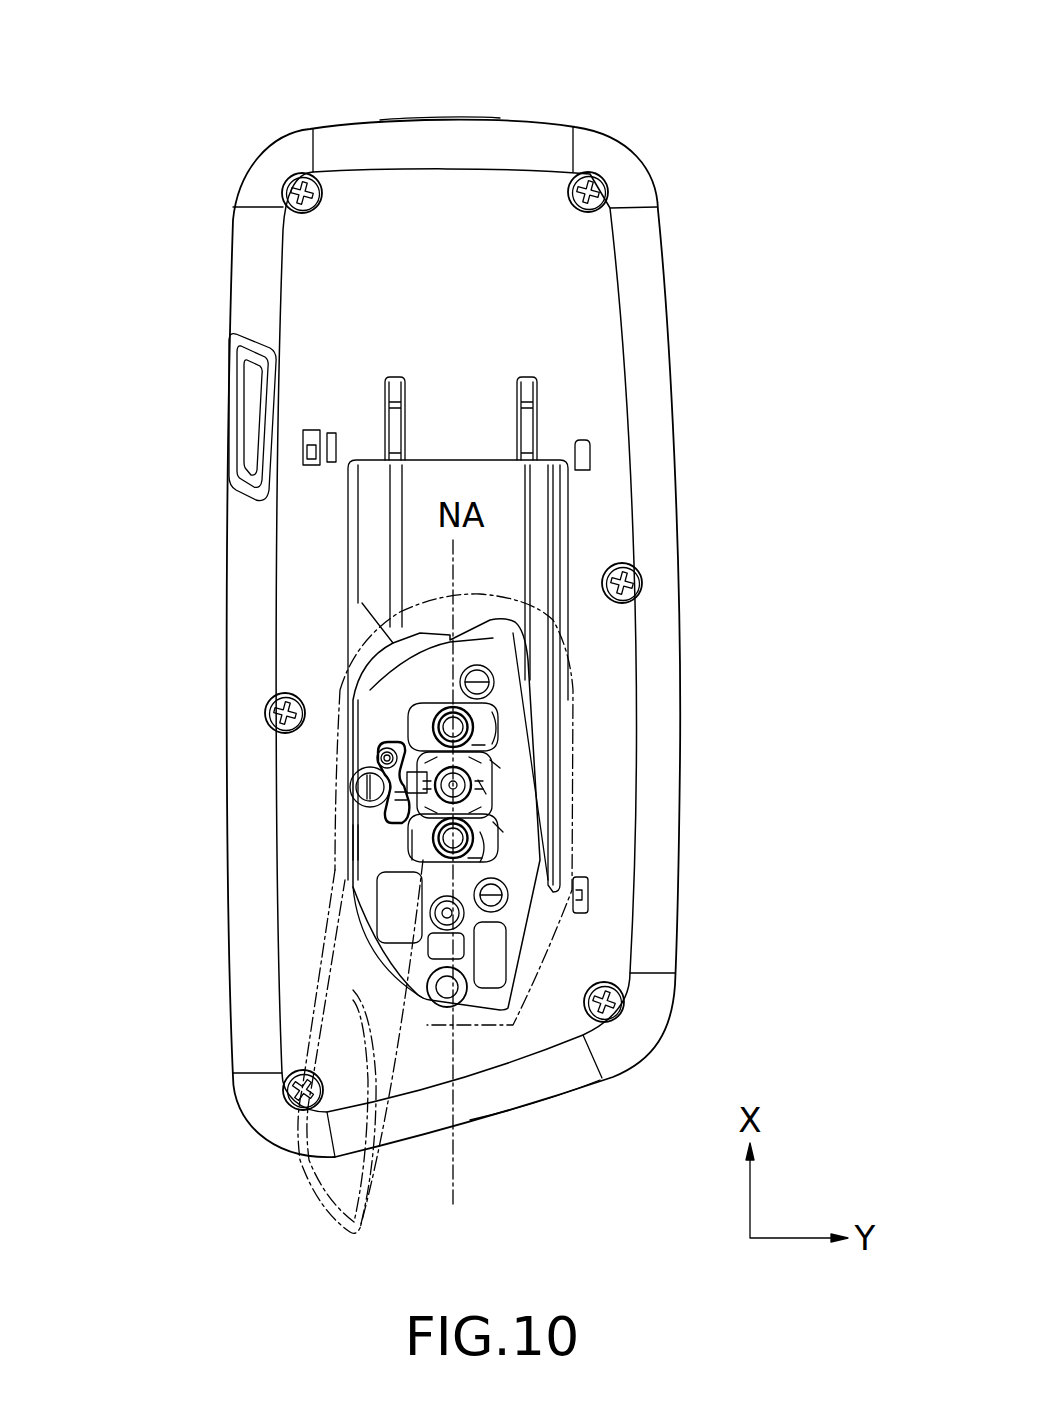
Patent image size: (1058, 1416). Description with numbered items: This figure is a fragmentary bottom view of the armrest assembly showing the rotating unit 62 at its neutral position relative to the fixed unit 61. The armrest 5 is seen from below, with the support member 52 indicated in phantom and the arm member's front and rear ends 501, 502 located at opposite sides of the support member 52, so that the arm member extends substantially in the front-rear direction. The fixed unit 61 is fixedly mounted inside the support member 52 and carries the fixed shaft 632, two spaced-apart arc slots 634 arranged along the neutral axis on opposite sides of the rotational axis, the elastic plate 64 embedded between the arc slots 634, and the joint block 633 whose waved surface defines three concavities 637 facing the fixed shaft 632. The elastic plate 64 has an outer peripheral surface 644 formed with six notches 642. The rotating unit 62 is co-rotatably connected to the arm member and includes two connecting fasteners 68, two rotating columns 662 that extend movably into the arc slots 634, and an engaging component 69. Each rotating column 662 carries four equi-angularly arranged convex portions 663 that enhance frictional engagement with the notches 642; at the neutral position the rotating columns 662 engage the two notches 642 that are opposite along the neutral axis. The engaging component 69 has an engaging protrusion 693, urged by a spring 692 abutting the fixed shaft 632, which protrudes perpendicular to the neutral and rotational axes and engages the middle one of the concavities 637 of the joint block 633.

The armrest 5 is at (668, 305).
The front end 501 is at (440, 118).
The rear end 502 is at (525, 1110).
The support member 52 is at (300, 1182).
The fixed unit 61 is at (372, 846).
The rotating unit 62 is at (500, 767).
The elastic plate 64 is at (500, 822).
The connecting fasteners 68 is at (435, 718).
The engaging component 69 is at (378, 797).
The fixed shaft 632 is at (495, 800).
The joint block 633 is at (350, 770).
The arc slots 634 is at (490, 720).
The concavities 637 is at (362, 828).
The notches 642 is at (497, 853).
The outer peripheral surface 644 is at (495, 785).
The rotating columns 662 is at (480, 748).
The convex portions 663 is at (430, 828).
The spring 692 is at (425, 706).
The engaging protrusion 693 is at (352, 783).